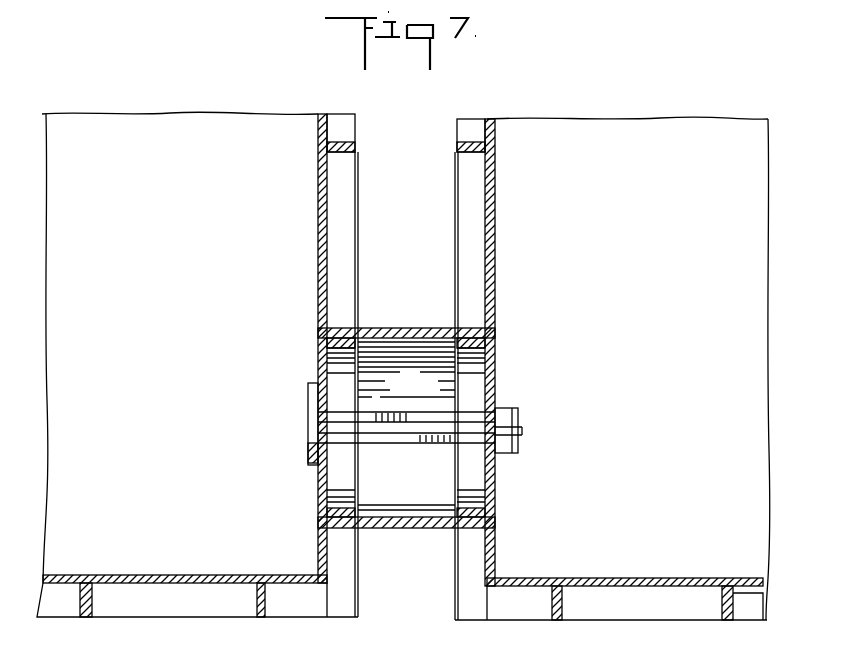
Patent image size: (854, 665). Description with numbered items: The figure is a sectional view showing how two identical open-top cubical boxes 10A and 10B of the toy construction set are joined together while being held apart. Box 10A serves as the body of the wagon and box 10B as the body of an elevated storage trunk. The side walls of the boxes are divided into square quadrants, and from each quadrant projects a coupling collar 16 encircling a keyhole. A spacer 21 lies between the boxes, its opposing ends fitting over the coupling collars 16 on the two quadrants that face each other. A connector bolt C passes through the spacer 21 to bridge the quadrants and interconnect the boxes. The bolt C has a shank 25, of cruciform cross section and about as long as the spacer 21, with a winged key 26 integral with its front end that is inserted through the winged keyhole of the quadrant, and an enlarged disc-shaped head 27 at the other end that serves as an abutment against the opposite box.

The open-top cubical box 10A is at (340, 112).
The open-top cubical box 10B is at (493, 116).
The spacer 21 is at (415, 327).
The coupling collar 16 is at (473, 352).
The connector bolt C is at (424, 410).
The shank 25 is at (397, 440).
The key 26 is at (500, 452).
The enlarged head 27 is at (313, 468).